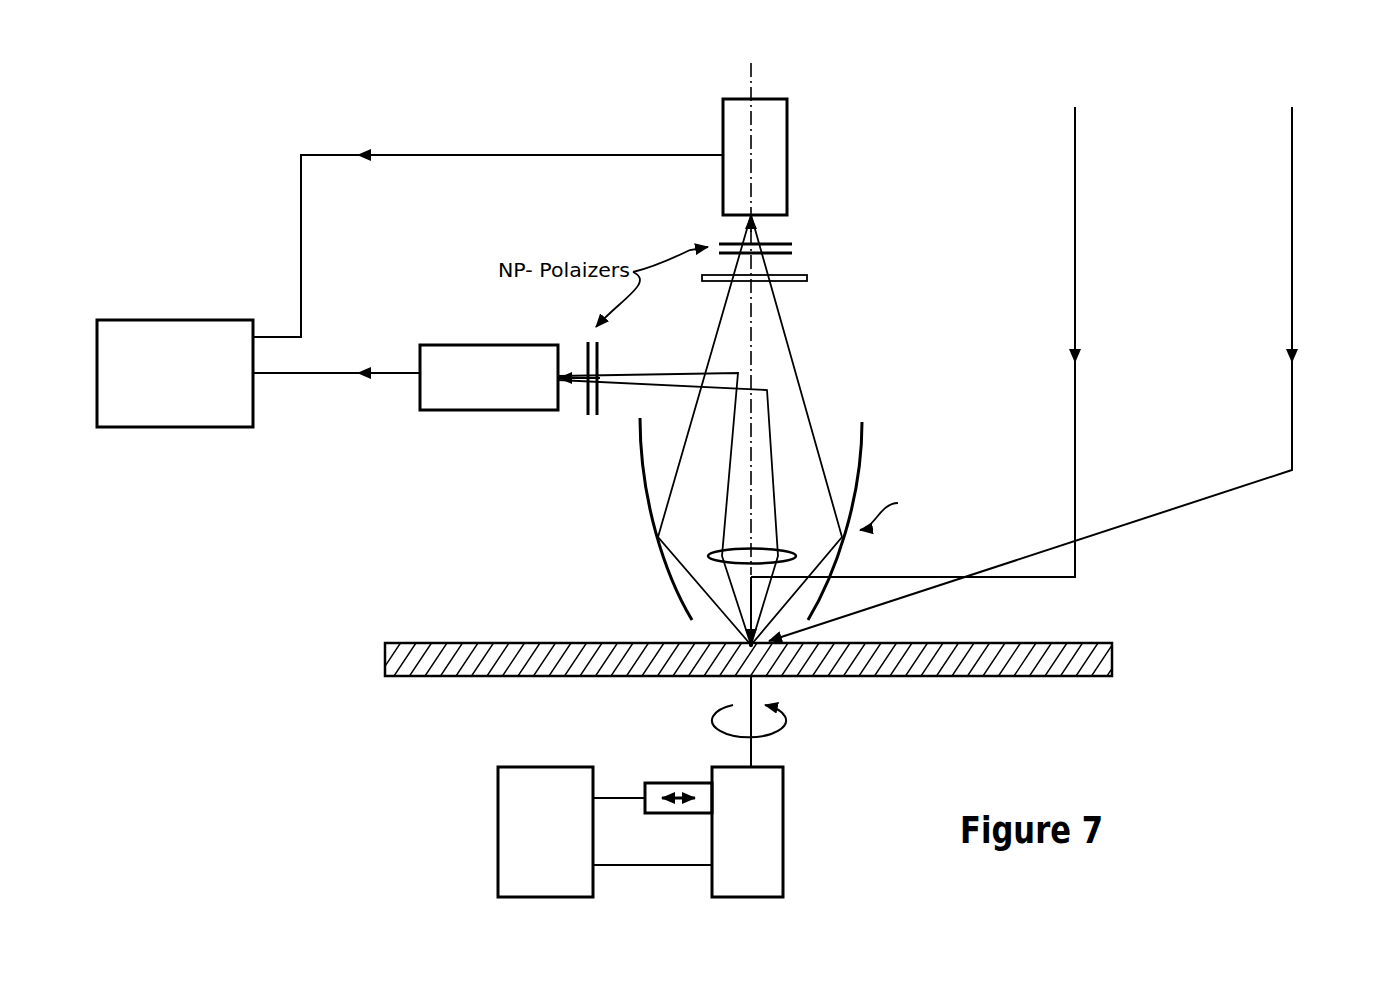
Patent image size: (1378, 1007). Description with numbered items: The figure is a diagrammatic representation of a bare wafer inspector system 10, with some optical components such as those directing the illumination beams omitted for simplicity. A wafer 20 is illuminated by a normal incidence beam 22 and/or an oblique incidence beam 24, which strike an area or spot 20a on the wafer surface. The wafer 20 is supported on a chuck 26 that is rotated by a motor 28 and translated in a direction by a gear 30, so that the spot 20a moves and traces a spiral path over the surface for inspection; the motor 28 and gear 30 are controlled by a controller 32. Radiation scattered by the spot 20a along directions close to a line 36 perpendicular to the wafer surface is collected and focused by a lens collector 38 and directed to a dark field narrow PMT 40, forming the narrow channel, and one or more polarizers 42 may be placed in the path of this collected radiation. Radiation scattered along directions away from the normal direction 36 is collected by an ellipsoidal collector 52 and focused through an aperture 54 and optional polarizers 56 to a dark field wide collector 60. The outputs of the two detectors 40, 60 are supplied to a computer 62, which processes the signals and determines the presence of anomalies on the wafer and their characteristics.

The bare wafer inspector system 10 is at (178, 110).
The wafer 20 is at (362, 594).
The illuminated area or spot 20a is at (778, 640).
The normal incidence beam 22 is at (1077, 175).
The oblique incidence beam 24 is at (1293, 175).
The chuck 26 is at (923, 678).
The motor 28 is at (785, 840).
The gear 30 is at (680, 783).
The controller 32 is at (551, 767).
The line perpendicular to the wafer surface 36 is at (757, 68).
The lens collector 38 is at (758, 530).
The dark field narrow PMT 40 is at (466, 345).
The polarizers 42 is at (592, 418).
The ellipsoidal collector 52 is at (863, 457).
The aperture 54 is at (808, 278).
The polarizers 56 is at (793, 249).
The dark field collector 60 is at (787, 172).
The computer 62 is at (180, 318).